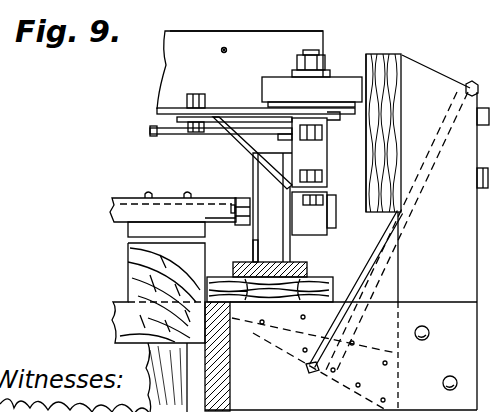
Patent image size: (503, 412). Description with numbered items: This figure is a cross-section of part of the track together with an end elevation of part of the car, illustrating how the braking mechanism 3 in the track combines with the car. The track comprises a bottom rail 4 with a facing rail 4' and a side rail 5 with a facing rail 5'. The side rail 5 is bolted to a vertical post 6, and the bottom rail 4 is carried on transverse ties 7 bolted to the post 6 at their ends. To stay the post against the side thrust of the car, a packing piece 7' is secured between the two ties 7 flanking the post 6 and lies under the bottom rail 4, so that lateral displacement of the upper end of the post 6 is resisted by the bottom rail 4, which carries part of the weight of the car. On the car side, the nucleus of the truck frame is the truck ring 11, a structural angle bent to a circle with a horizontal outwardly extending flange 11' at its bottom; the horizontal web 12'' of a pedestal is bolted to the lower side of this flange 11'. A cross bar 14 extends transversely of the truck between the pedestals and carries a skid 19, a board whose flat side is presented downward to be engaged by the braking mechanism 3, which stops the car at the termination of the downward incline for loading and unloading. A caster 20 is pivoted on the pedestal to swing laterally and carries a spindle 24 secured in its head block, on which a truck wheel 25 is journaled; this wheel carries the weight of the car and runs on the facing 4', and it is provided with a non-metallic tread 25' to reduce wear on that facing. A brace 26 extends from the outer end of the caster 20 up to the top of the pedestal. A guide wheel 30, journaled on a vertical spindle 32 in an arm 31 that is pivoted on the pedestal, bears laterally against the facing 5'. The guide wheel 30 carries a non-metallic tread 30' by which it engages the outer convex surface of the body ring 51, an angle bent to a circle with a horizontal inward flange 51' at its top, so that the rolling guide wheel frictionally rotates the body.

The braking mechanism 3 is at (137, 282).
The bottom rail 4 is at (279, 273).
The facing rail 4' is at (267, 257).
The side rail 5 is at (389, 120).
The facing rail 5' is at (356, 120).
The vertical post 6 is at (383, 249).
The transverse tie 7 is at (436, 358).
The packing piece 7' is at (314, 362).
The truck ring 11 is at (226, 124).
The horizontal flange 11' is at (253, 135).
The horizontal web 12'' is at (252, 134).
The cross bar 14 is at (167, 200).
The skid 19 is at (137, 230).
The caster 20 is at (309, 213).
The spindle 24 is at (233, 200).
The truck wheel 25 is at (276, 291).
The non-metallic tread 25' is at (272, 207).
The brace 26 is at (309, 152).
The guide wheel 30 is at (294, 56).
The non-metallic tread 30' is at (312, 91).
The arm 31 is at (325, 121).
The spindle 32 is at (308, 52).
The body ring 51 is at (240, 70).
The flange 51' is at (246, 17).